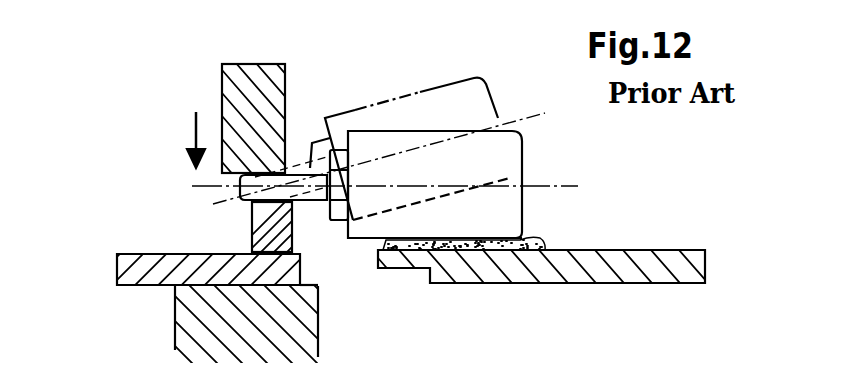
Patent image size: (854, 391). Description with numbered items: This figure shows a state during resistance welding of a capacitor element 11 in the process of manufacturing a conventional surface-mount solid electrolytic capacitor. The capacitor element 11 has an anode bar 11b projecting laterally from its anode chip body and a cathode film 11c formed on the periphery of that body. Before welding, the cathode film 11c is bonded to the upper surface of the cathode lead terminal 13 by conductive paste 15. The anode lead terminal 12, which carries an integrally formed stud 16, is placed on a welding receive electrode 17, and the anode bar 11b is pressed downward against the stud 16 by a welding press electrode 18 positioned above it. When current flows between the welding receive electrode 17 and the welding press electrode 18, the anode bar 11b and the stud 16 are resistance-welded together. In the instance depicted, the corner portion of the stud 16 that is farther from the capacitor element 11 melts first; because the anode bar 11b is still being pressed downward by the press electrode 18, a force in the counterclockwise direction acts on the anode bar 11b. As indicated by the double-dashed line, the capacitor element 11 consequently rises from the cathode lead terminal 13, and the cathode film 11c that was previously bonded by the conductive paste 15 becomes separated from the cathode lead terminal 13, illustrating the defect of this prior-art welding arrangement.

The capacitor element 11 is at (465, 146).
The anode bar 11b is at (309, 145).
The cathode film 11c is at (478, 250).
The anode lead terminal 12 is at (147, 263).
The cathode lead terminal 13 is at (637, 250).
The conductive paste 15 is at (540, 240).
The stud 16 is at (252, 228).
The welding receive electrode 17 is at (200, 330).
The welding press electrode 18 is at (250, 89).